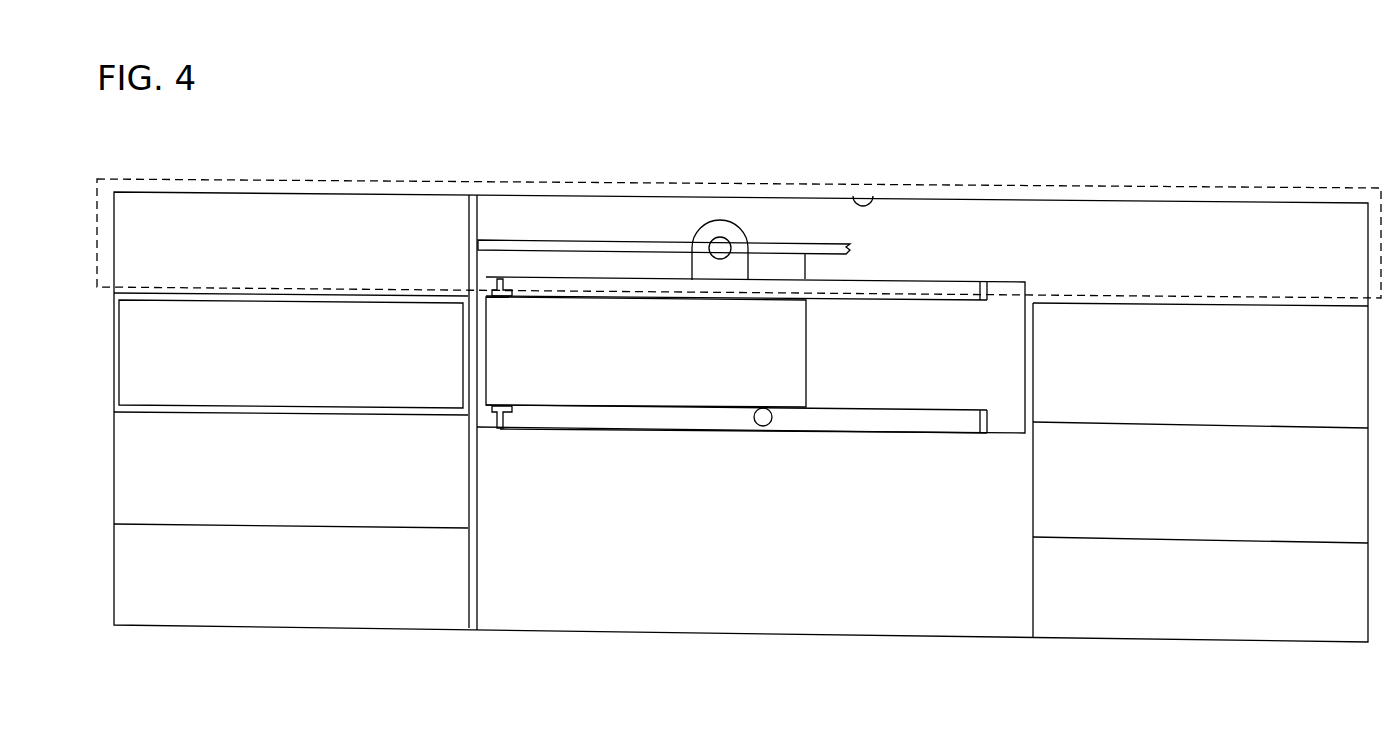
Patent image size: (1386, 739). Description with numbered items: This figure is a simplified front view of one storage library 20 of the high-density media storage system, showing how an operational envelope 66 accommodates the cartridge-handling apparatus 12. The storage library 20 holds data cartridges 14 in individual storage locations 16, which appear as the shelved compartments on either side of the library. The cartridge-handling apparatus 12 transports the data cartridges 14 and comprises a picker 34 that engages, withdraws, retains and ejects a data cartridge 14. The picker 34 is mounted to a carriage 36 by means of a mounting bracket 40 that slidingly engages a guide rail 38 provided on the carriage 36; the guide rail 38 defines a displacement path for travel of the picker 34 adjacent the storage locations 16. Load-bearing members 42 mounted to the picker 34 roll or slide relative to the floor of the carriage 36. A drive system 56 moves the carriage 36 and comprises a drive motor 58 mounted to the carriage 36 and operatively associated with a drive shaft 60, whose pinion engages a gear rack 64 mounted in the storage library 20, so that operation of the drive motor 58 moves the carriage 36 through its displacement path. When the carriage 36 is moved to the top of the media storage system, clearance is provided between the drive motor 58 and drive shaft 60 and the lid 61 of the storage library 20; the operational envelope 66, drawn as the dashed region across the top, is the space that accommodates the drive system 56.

The cartridge-handling apparatus 12 is at (751, 391).
The data cartridge 14 is at (258, 406).
The storage location 16 is at (168, 411).
The storage library 20 is at (1220, 200).
The picker 34 is at (592, 408).
The carriage 36 is at (937, 434).
The guide rail 38 is at (902, 298).
The mounting bracket 40 is at (532, 291).
The load-bearing member 42 is at (773, 418).
The drive system 56 is at (664, 203).
The drive motor 58 is at (745, 231).
The drive shaft 60 is at (578, 240).
The lid 61 is at (878, 198).
The gear rack 64 is at (467, 222).
The operational envelope 66 is at (1050, 186).